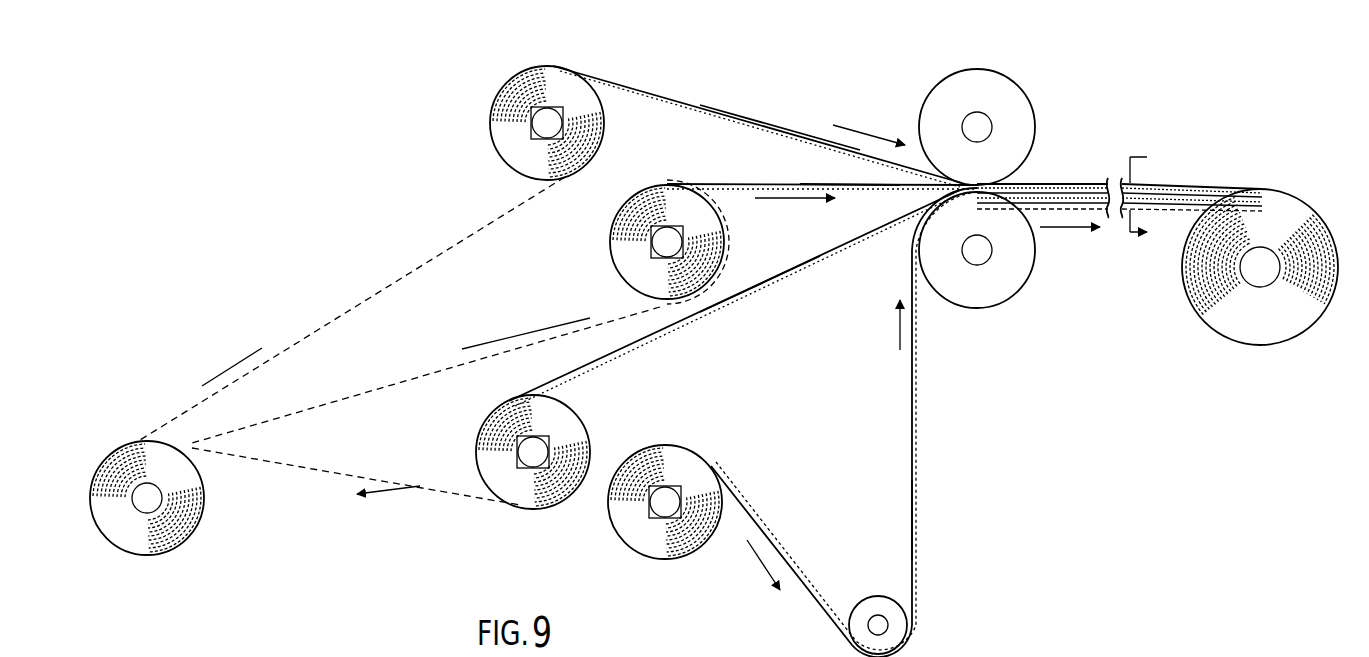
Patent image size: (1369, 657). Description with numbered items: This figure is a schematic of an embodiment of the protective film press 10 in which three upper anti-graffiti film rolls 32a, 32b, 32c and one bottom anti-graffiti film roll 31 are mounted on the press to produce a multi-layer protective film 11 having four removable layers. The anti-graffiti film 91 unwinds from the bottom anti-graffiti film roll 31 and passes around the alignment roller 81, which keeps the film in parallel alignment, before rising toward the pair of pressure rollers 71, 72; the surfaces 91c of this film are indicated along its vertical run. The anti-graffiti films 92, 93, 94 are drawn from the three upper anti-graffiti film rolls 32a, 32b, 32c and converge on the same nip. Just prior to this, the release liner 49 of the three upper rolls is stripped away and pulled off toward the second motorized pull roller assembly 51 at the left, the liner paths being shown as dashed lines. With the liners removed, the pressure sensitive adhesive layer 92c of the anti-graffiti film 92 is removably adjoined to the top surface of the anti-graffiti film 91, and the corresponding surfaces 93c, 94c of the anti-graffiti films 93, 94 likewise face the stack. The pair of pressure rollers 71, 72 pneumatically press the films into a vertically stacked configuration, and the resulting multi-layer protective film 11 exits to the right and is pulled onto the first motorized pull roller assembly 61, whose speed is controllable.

The protective film press 10 is at (1152, 199).
The multi-layer protective film 11 is at (1082, 184).
The bottom anti-graffiti film roll 31 is at (643, 545).
The first upper anti-graffiti film roll 32a is at (618, 250).
The second upper anti-graffiti film roll 32b is at (495, 452).
The third upper anti-graffiti film roll 32c is at (502, 122).
The release liner 49 is at (412, 272).
The second motorized pull roller assembly 51 is at (188, 554).
The first motorized pull roller assembly 61 is at (1196, 345).
The pressure roller 71 is at (977, 305).
The pressure roller 72 is at (975, 72).
The alignment roller 81 is at (895, 625).
The anti-graffiti film 91 is at (910, 500).
The first web surfaces 91c is at (915, 525).
The anti-graffiti film 92 is at (667, 322).
The pressure sensitive adhesive layer 92c is at (752, 296).
The anti-graffiti film 93 is at (758, 172).
The third web surface 93c is at (855, 193).
The anti-graffiti film 94 is at (712, 106).
The fourth web surface 94c is at (760, 124).